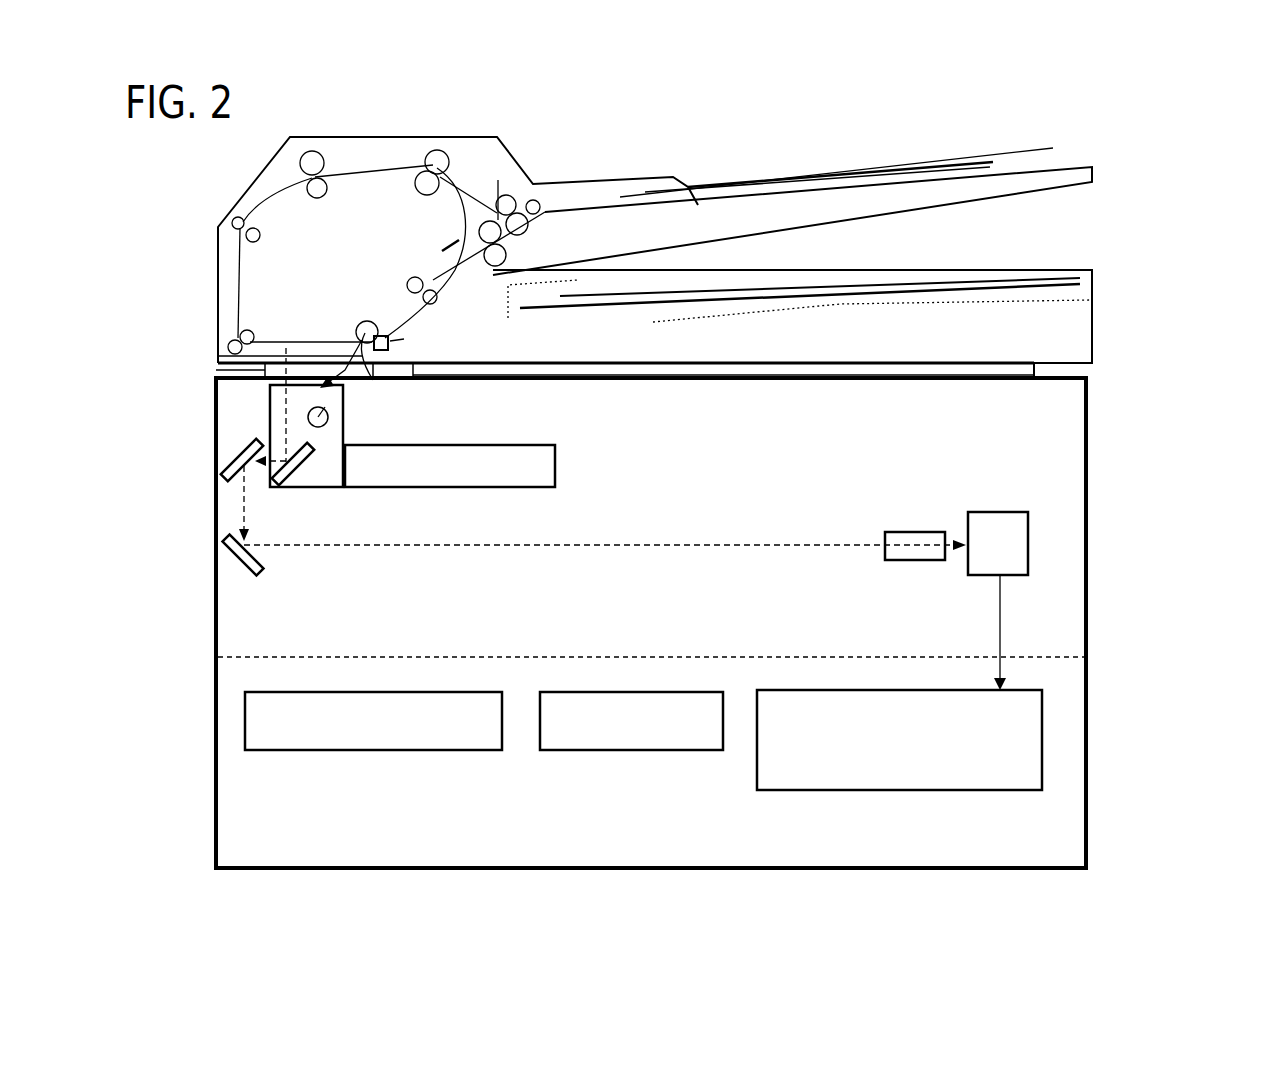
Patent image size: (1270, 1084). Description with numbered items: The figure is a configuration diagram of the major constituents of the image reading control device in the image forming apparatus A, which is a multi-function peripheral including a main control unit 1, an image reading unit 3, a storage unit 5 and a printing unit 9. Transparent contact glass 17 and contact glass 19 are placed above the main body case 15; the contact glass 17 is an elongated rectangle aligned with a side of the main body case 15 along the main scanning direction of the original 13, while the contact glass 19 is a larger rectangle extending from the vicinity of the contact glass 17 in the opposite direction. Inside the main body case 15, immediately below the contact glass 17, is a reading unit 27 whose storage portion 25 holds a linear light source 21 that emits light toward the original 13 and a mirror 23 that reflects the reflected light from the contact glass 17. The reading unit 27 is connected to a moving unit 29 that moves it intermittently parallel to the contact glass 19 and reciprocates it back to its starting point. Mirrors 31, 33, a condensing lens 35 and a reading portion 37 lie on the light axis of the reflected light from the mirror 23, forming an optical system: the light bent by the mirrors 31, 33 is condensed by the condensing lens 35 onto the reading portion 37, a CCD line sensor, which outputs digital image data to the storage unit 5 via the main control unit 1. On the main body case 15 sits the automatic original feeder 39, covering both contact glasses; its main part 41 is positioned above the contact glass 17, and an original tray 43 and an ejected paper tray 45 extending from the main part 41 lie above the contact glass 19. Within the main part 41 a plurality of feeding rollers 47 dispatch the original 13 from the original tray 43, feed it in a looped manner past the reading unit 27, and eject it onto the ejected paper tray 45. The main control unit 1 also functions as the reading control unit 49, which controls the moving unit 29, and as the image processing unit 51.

The image forming apparatus A is at (665, 837).
The main control unit 1 is at (899, 740).
The image reading unit 3 is at (860, 116).
The storage unit 5 is at (710, 735).
The printing unit 9 is at (491, 734).
The original 13 is at (878, 180).
The main body case 15 is at (657, 860).
The contact glass 17 is at (376, 378).
The contact glass 19 is at (832, 374).
The light source 21 is at (328, 418).
The mirror 23 is at (297, 487).
The storage portion 25 is at (327, 472).
The reading unit 27 is at (504, 339).
The moving unit 29 is at (540, 481).
The mirror 31 is at (236, 454).
The mirror 33 is at (255, 575).
The condensing lens 35 is at (900, 541).
The reading portion 37 is at (1002, 524).
The automatic original feeder 39 is at (552, 137).
The main part 41 is at (441, 124).
The original tray 43 is at (913, 193).
The ejected paper tray 45 is at (964, 339).
The feeding rollers 47 is at (426, 160).
The reading control unit 49 is at (898, 744).
The image processing unit 51 is at (899, 772).